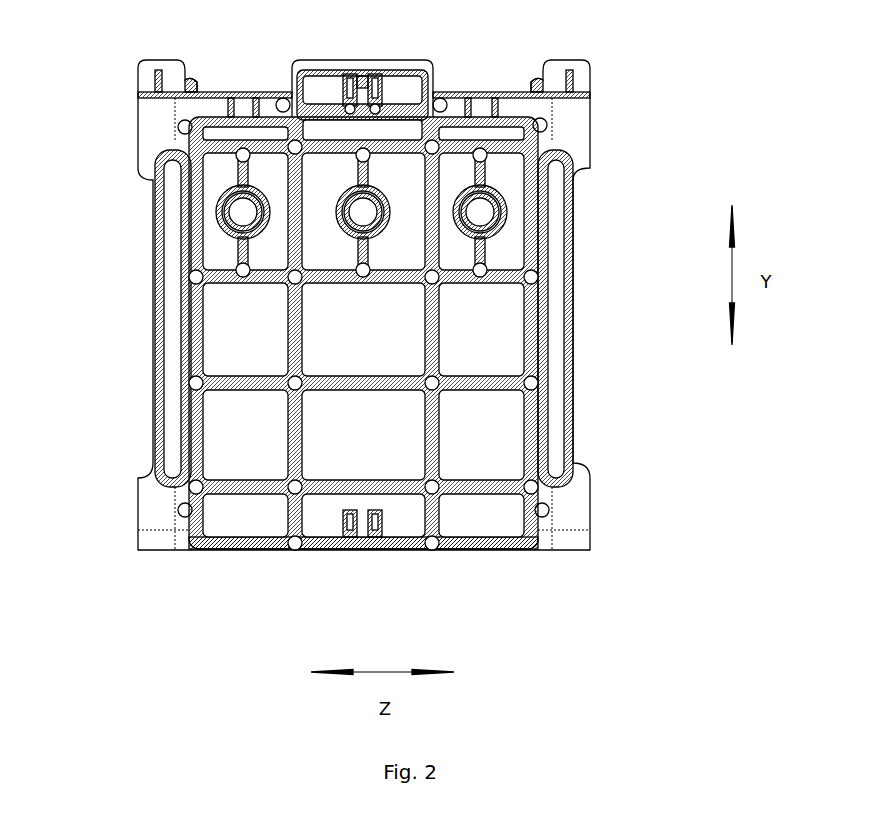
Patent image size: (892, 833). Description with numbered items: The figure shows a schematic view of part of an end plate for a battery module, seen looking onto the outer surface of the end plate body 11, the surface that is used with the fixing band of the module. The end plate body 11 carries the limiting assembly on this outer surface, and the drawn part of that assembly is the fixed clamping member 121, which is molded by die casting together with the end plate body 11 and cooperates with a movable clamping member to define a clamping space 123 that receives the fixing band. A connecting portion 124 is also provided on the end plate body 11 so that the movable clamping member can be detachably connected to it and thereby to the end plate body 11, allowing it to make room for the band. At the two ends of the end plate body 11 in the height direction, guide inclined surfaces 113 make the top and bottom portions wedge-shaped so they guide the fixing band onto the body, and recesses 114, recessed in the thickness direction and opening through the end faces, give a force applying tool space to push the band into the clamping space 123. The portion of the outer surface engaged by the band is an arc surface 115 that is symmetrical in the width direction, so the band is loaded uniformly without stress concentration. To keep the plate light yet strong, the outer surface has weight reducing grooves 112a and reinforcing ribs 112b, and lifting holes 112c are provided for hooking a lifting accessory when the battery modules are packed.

The end plate body 11 is at (433, 63).
The weight reducing groove 112a is at (515, 335).
The reinforcing rib 112b is at (418, 328).
The lifting hole 112c is at (215, 210).
The guide inclined surface 113 is at (160, 548).
The recess 114 is at (243, 98).
The arc surface 115 is at (573, 122).
The fixed clamping member 121 is at (180, 470).
The clamping space 123 is at (362, 102).
The connecting portion 124 is at (343, 96).